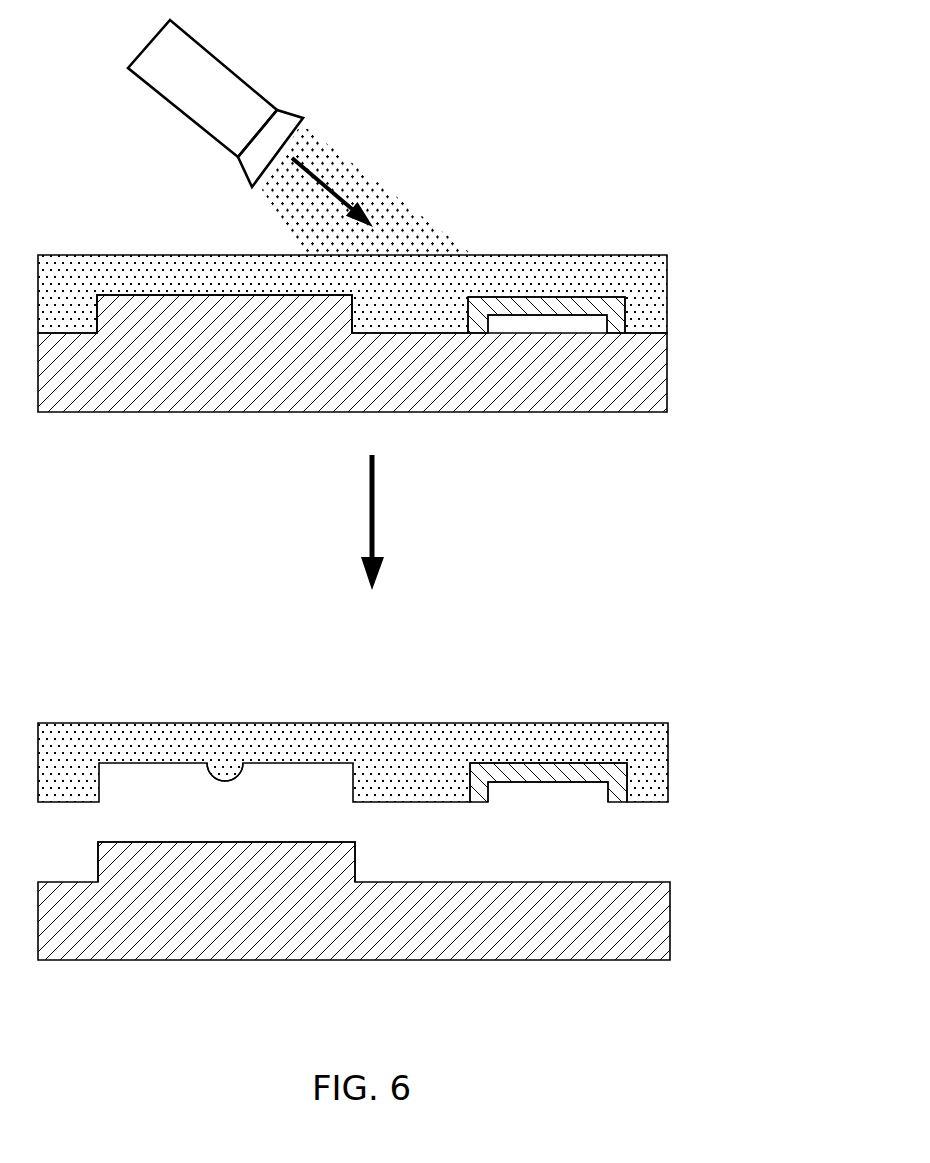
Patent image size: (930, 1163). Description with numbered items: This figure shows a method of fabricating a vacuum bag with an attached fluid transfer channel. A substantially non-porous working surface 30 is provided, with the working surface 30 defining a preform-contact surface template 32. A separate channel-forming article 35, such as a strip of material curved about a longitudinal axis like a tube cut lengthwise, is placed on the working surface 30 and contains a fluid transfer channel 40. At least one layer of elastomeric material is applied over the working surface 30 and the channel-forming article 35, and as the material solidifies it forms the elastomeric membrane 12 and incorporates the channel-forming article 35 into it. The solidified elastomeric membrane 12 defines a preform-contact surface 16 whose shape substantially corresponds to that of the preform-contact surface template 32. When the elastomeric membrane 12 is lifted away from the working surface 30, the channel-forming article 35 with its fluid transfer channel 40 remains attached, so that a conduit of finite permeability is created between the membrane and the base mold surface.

The elastomeric membrane 12 is at (105, 255).
The preform-contact surface 16 is at (246, 763).
The working surface 30 is at (520, 413).
The preform-contact surface template 32 is at (190, 320).
The channel-forming article 35 is at (617, 317).
The fluid transfer channel 40 is at (590, 306).